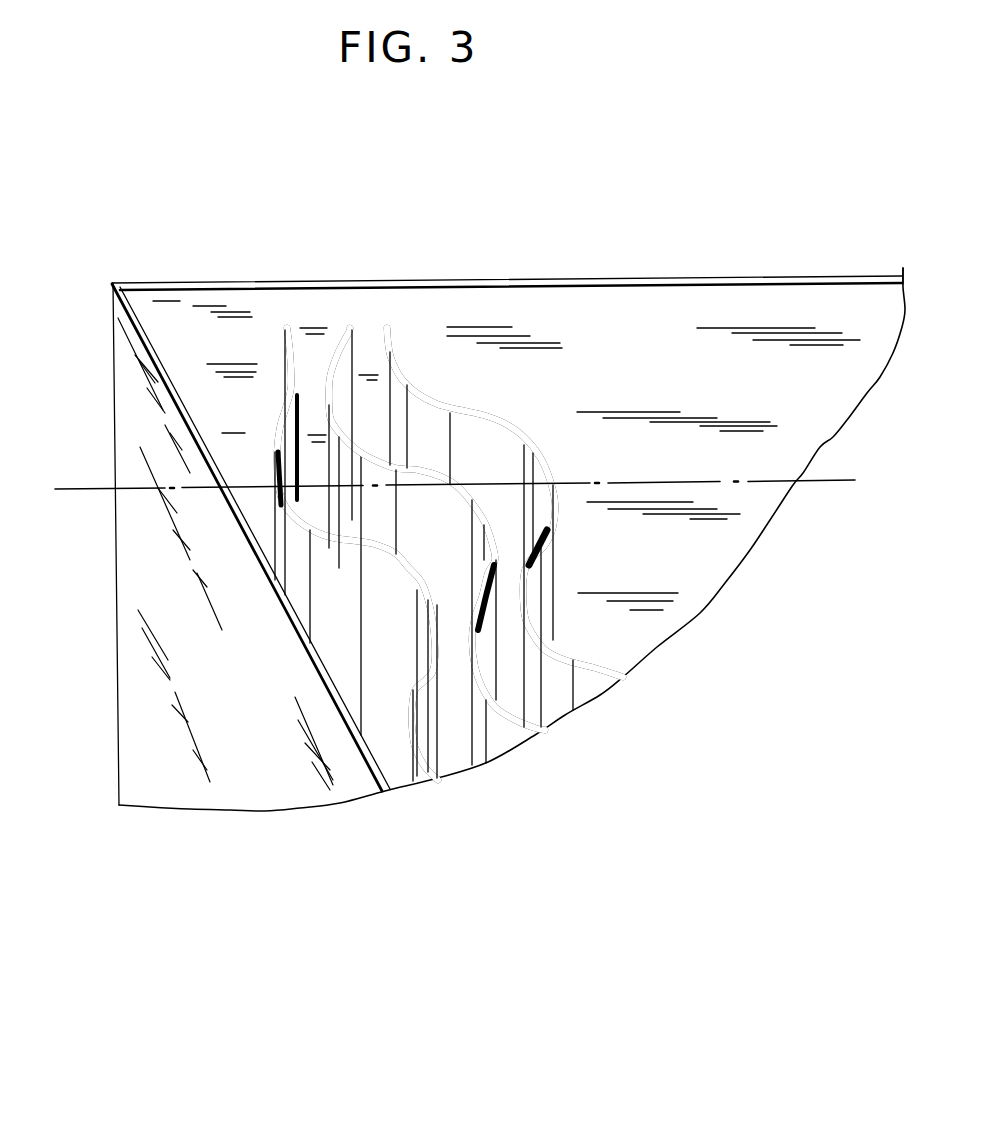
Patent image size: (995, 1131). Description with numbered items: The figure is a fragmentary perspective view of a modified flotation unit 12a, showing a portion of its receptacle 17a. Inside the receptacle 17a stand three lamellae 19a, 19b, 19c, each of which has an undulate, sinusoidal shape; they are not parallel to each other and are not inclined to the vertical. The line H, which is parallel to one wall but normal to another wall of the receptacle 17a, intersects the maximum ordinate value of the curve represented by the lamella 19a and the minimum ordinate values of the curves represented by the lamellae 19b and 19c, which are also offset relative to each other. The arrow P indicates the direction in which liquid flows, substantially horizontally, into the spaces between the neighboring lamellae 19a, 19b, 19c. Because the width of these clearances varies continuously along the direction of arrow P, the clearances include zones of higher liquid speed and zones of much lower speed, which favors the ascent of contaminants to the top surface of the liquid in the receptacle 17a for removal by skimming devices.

The flotation unit 12a is at (612, 226).
The receptacle 17a is at (697, 364).
The lamella 19a is at (420, 785).
The lamella 19b is at (503, 760).
The lamella 19c is at (573, 693).
The line H is at (443, 489).
The arrow P is at (563, 863).